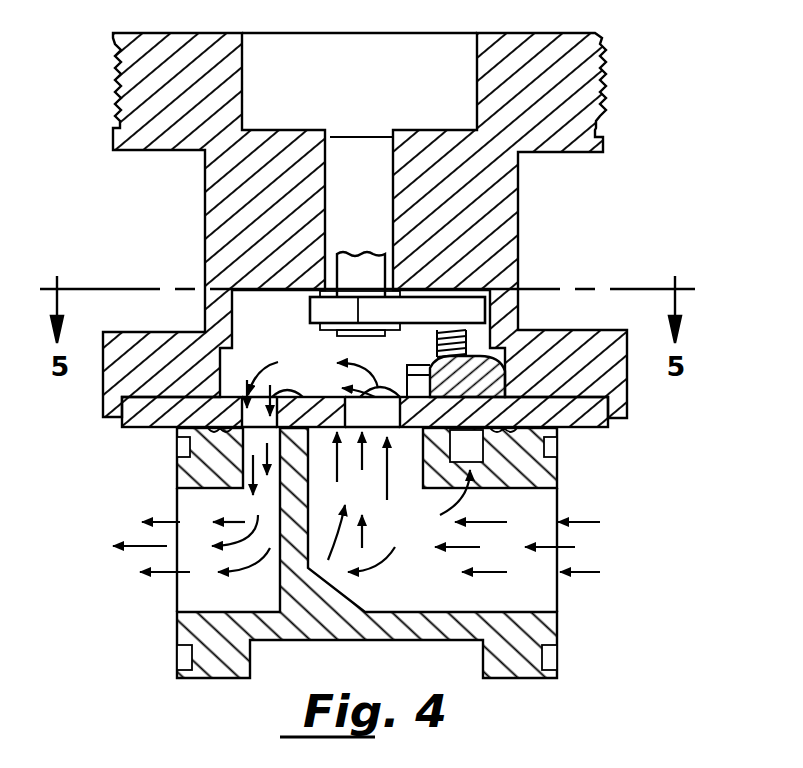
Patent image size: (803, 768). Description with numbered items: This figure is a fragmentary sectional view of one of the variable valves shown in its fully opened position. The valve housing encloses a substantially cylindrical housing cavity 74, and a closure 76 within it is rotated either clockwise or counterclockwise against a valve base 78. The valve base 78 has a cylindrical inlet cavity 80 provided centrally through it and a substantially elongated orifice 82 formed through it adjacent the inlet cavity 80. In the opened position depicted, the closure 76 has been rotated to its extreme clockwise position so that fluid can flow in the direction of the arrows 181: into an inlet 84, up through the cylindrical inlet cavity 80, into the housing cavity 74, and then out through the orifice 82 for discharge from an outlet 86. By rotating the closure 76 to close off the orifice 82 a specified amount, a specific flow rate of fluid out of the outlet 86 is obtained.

The housing cavity 74 is at (236, 362).
The closure 76 is at (492, 374).
The valve base 78 is at (590, 428).
The cylindrical inlet cavity 80 is at (373, 263).
The elongated orifice 82 is at (165, 421).
The inlet 84 is at (558, 603).
The outlet 86 is at (190, 603).
The arrows 181 is at (562, 566).